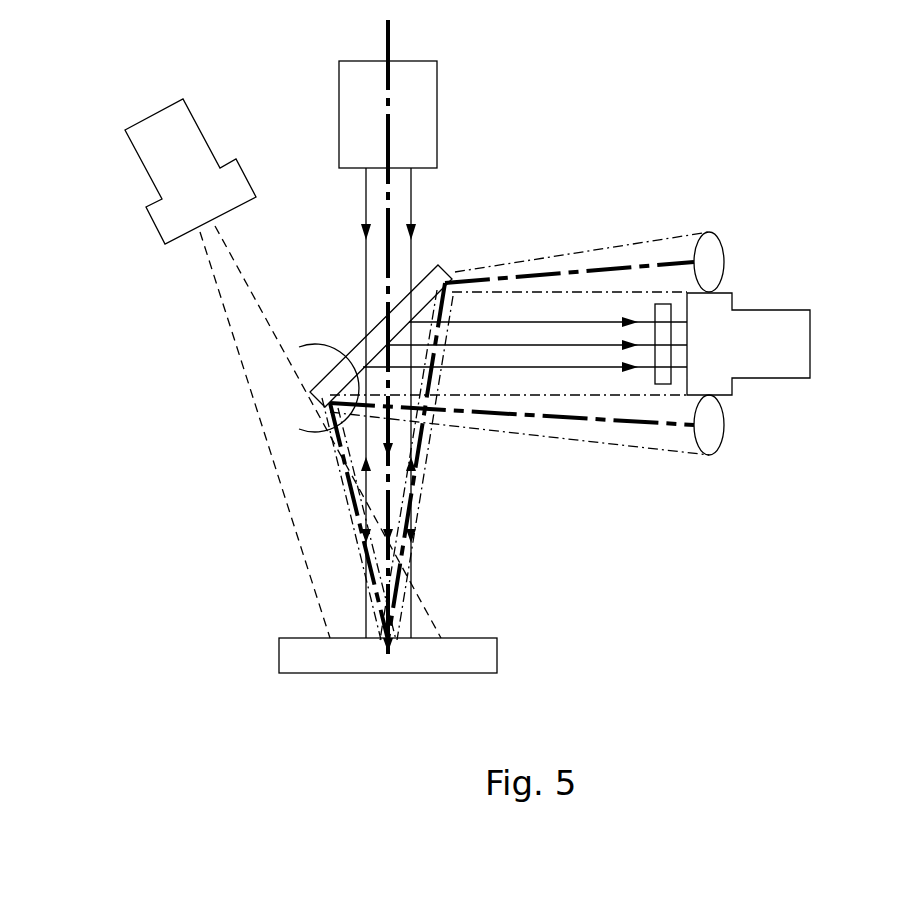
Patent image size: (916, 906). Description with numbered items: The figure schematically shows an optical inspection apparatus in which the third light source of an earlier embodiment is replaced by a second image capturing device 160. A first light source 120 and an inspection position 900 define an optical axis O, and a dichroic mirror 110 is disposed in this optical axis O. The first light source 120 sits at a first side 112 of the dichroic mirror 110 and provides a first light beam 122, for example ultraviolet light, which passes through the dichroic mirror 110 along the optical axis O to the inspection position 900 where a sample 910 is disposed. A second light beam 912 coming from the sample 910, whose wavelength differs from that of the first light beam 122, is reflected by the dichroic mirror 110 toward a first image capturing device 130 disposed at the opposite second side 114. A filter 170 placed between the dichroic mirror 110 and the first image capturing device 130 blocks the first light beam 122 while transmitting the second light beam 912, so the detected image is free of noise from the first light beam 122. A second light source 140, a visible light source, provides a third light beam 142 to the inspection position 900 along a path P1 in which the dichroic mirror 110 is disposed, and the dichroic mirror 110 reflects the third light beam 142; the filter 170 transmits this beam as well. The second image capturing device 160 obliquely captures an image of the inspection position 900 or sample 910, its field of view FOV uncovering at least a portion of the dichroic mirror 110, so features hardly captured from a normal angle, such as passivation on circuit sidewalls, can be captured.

The optical axis O is at (396, 35).
The dichroic mirror 110 is at (261, 351).
The first side 112 is at (347, 354).
The second side 114 is at (330, 436).
The first light source 120 is at (417, 106).
The first light beam 122 is at (418, 199).
The first image capturing device 130 is at (790, 345).
The second light source 140 is at (714, 260).
The third light beam 142 is at (590, 452).
The second image capturing device 160 is at (186, 130).
The filter 170 is at (668, 385).
The inspection position 900 is at (380, 650).
The sample 910 is at (475, 660).
The second light beam 912 is at (606, 316).
The path P1 is at (540, 428).
The field of view FOV is at (205, 286).